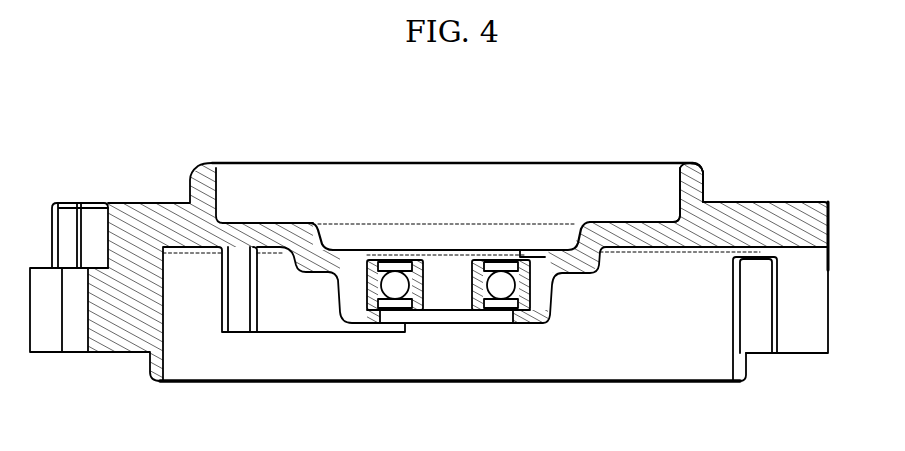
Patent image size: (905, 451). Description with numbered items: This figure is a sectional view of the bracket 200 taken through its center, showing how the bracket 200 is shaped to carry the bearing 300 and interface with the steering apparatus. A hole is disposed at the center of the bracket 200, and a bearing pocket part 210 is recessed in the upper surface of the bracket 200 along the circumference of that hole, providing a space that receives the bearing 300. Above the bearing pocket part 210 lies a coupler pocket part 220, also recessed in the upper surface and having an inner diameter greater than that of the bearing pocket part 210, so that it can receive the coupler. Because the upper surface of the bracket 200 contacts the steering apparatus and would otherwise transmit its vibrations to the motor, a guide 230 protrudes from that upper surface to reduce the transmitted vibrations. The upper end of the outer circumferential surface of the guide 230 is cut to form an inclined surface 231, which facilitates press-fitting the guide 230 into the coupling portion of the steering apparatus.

The bracket 200 is at (814, 197).
The bearing pocket part 210 is at (530, 295).
The coupler pocket part 220 is at (568, 224).
The guide 230 is at (704, 197).
The inclined surface 231 is at (704, 168).
The bearing 300 is at (470, 302).